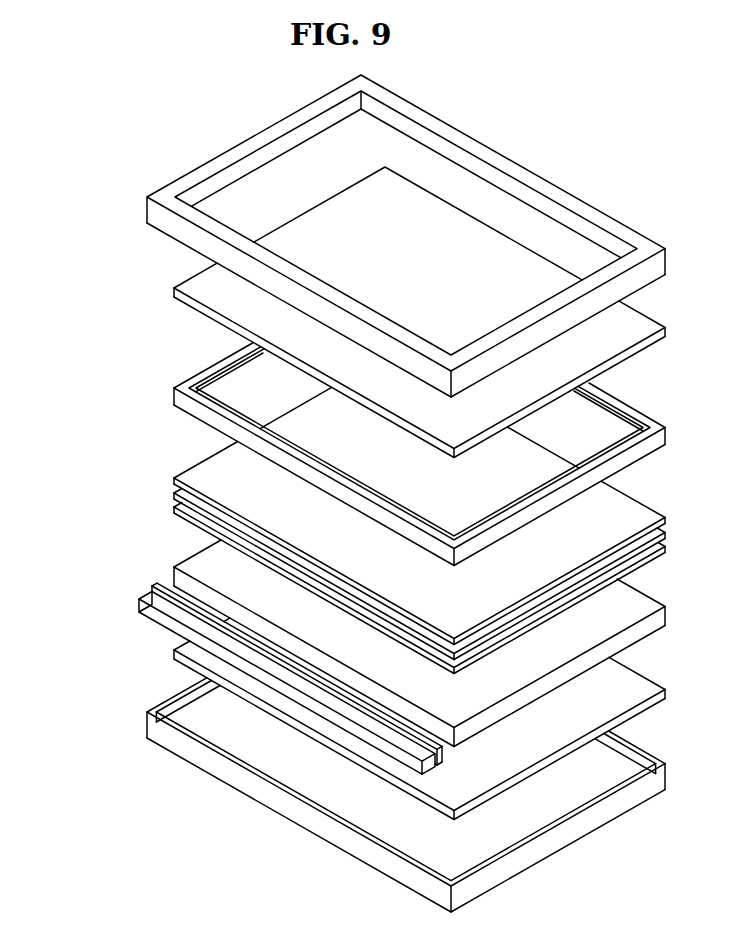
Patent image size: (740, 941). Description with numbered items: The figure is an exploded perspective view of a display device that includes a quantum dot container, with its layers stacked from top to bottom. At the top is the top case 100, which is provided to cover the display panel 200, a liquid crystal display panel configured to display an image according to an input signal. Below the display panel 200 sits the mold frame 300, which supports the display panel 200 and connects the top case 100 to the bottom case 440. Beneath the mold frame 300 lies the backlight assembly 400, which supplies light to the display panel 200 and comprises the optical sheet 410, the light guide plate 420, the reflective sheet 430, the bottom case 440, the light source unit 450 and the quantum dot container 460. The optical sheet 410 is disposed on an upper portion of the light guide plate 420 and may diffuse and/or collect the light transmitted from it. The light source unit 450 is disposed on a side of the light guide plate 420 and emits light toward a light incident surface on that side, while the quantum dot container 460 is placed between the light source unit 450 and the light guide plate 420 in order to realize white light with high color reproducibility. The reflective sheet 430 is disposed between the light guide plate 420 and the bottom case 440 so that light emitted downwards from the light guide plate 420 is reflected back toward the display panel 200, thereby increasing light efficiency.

The top case 100 is at (157, 214).
The display panel 200 is at (180, 297).
The mold frame 300 is at (180, 404).
The backlight assembly 400 is at (333, 649).
The optical sheet 410 is at (172, 484).
The light guide plate 420 is at (177, 575).
The reflective sheet 430 is at (176, 655).
The bottom case 440 is at (373, 795).
The light source unit 450 is at (165, 616).
The quantum dot container 460 is at (153, 586).